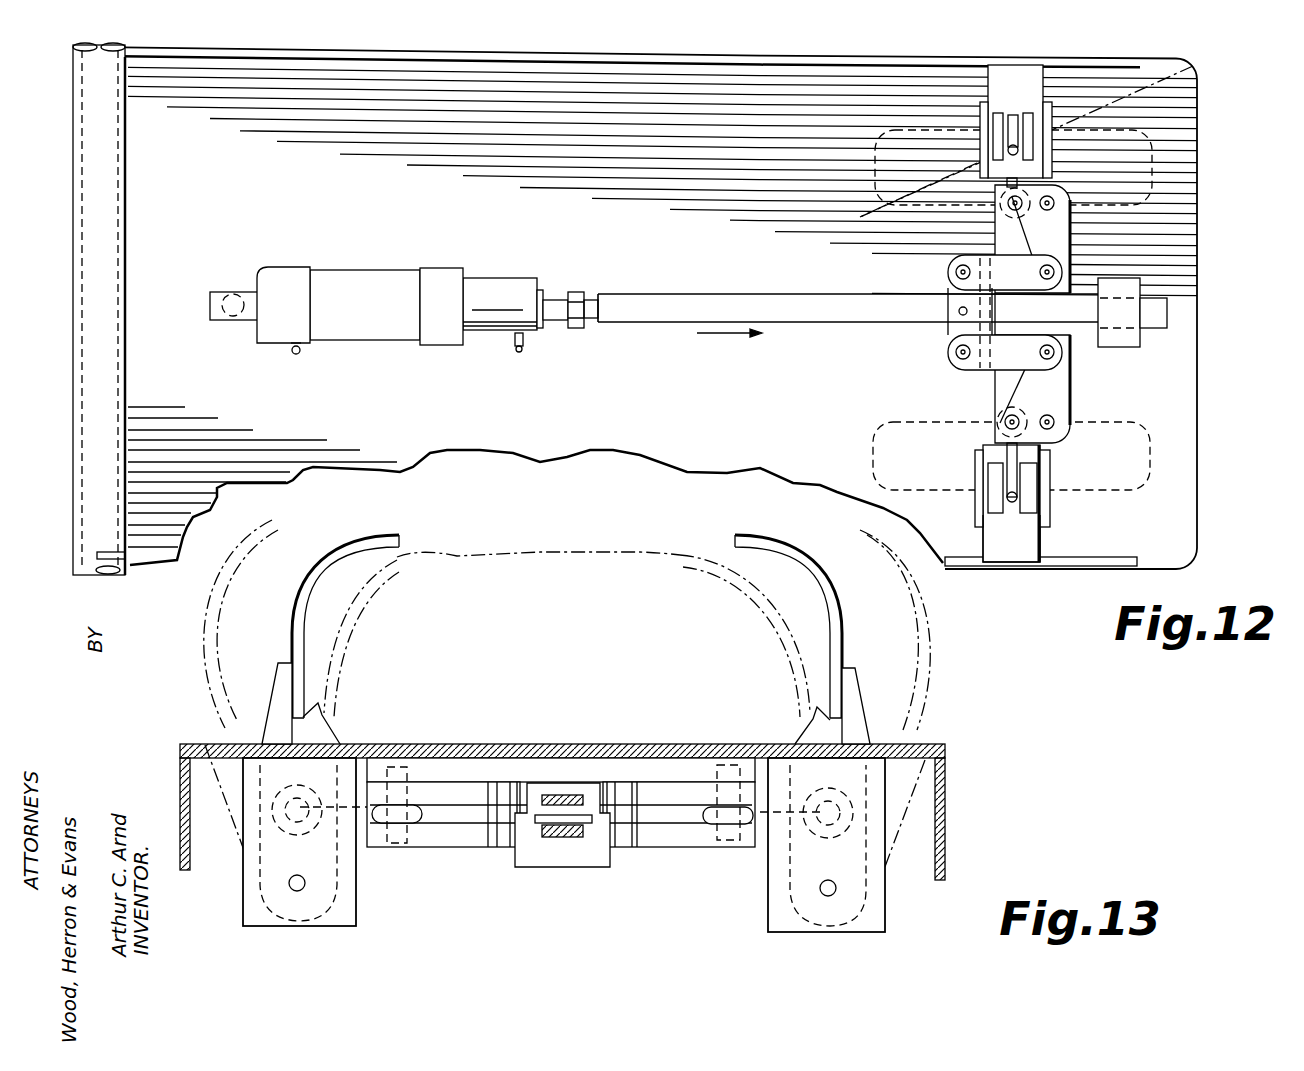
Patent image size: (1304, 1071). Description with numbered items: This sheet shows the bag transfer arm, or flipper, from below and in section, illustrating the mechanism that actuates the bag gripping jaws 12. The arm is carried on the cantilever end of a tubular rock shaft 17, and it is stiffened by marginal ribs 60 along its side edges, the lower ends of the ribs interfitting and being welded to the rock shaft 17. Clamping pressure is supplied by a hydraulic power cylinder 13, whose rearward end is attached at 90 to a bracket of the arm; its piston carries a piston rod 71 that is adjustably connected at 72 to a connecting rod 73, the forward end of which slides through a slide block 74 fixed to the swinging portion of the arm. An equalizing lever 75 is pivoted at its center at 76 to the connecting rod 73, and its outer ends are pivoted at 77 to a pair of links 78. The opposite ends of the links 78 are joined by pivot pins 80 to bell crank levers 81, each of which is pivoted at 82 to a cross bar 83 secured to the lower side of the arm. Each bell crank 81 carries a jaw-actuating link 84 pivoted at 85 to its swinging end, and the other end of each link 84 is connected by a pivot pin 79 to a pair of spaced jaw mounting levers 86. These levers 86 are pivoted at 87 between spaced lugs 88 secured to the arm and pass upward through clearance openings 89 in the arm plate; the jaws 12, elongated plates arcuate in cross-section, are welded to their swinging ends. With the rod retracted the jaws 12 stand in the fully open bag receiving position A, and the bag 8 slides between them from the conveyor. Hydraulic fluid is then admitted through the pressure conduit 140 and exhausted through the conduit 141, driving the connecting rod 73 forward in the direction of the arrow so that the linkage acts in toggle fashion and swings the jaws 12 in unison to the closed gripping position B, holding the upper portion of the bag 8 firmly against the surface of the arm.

In FIG. 13, the bag 8 is at (548, 548).
In FIG. 12, the bag gripping jaws 12 is at (1195, 103).
In FIG. 13, the bag gripping jaws 12 is at (915, 650).
In FIG. 12, the hydraulic power cylinder 13 is at (370, 272).
In FIG. 12, the tubular rock shaft 17 is at (125, 318).
In FIG. 12, the marginal ribs 60 is at (225, 62).
In FIG. 13, the marginal ribs 60 is at (945, 868).
In FIG. 12, the piston rod 71 is at (558, 298).
In FIG. 12, the adjustable connection 72 is at (590, 292).
In FIG. 12, the connecting rod 73 is at (848, 315).
In FIG. 13, the connecting rod 73 is at (555, 840).
In FIG. 12, the slide block 74 is at (1140, 340).
In FIG. 13, the slide block 74 is at (565, 867).
In FIG. 12, the equalizing lever 75 is at (948, 330).
In FIG. 13, the equalizing lever 75 is at (585, 840).
In FIG. 12, the pivot 76 is at (958, 311).
In FIG. 13, the pivot 76 is at (575, 780).
In FIG. 12, the pivots 77 is at (956, 360).
In FIG. 12, the links 78 is at (1005, 312).
In FIG. 13, the links 78 is at (650, 847).
In FIG. 13, the pivot pin 79 is at (828, 838).
In FIG. 12, the pivot pins 80 is at (1055, 352).
In FIG. 12, the bell crank levers 81 is at (1070, 210).
In FIG. 13, the bell crank levers 81 is at (440, 845).
In FIG. 12, the pivots 82 is at (1055, 430).
In FIG. 13, the pivots 82 is at (728, 760).
In FIG. 12, the cross bar 83 is at (995, 405).
In FIG. 13, the cross bar 83 is at (560, 758).
In FIG. 12, the jaw-actuating link 84 is at (988, 455).
In FIG. 13, the jaw-actuating link 84 is at (735, 825).
In FIG. 12, the pivot 85 is at (1010, 205).
In FIG. 12, the jaw mounting levers 86 is at (1193, 66).
In FIG. 13, the jaw mounting levers 86 is at (850, 700).
In FIG. 13, the pivot 87 is at (828, 896).
In FIG. 12, the lugs 88 is at (1050, 500).
In FIG. 13, the lugs 88 is at (885, 920).
In FIG. 12, the openings 89 is at (1007, 553).
In FIG. 13, the openings 89 is at (935, 748).
In FIG. 12, the cylinder attachments 90 is at (445, 268).
In FIG. 12, the pressure conduit 140 is at (297, 355).
In FIG. 12, the exhaust conduit 141 is at (517, 348).
In FIG. 13, the open position A is at (955, 630).
In FIG. 13, the closed position B is at (790, 626).